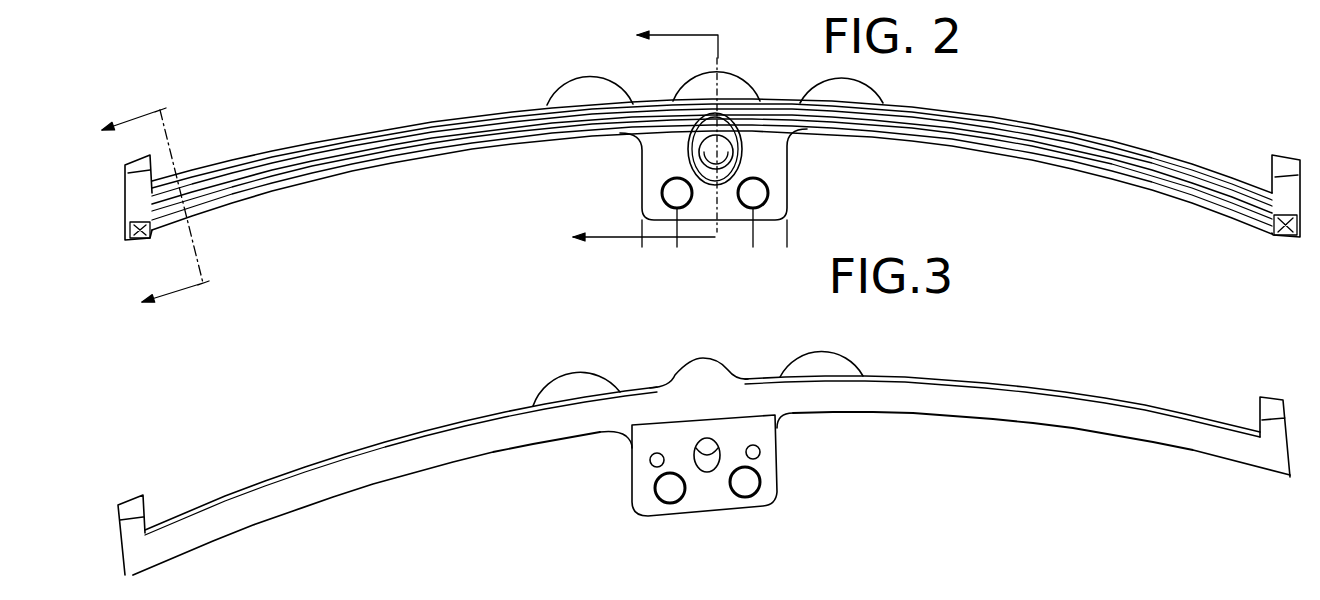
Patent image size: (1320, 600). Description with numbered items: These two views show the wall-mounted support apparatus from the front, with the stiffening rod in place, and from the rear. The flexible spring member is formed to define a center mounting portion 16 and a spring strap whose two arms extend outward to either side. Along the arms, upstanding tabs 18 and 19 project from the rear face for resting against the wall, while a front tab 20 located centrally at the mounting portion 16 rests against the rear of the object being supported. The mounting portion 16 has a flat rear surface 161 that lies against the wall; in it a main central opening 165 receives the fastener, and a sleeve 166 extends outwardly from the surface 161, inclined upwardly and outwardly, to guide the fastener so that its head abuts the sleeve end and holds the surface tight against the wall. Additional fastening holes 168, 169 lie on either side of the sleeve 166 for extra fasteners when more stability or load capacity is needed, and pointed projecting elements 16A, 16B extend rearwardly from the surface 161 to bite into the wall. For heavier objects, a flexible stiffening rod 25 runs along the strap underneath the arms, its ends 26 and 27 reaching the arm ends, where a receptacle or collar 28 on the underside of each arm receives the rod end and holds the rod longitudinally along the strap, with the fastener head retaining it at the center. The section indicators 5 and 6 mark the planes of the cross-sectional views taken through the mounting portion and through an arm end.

In FIG. 2, the section line 5- 5 is at (680, 138).
In FIG. 2, the section line 6- 6 is at (170, 199).
In FIG. 2, the center mounting portion 16 is at (777, 160).
In FIG. 3, the pointed projecting element 16A is at (650, 461).
In FIG. 3, the pointed projecting element 16B is at (764, 455).
In FIG. 3, the upstanding tab 18 is at (566, 376).
In FIG. 3, the upstanding tab 19 is at (821, 362).
In FIG. 3, the front tab 20 is at (662, 372).
In FIG. 2, the flexible stiffening rod 25 is at (988, 143).
In FIG. 2, the end of stiffening rod 26 is at (158, 223).
In FIG. 2, the end of stiffening rod 27 is at (1268, 230).
In FIG. 2, the receptacle or collar 28 is at (137, 238).
In FIG. 3, the flat rear surface 161 is at (727, 427).
In FIG. 2, the main central opening 165 is at (690, 150).
In FIG. 3, the main central opening 165 is at (702, 440).
In FIG. 2, the sleeve 166 is at (712, 163).
In FIG. 3, the additional fastening hole 168 is at (668, 490).
In FIG. 3, the additional fastening hole 169 is at (748, 485).